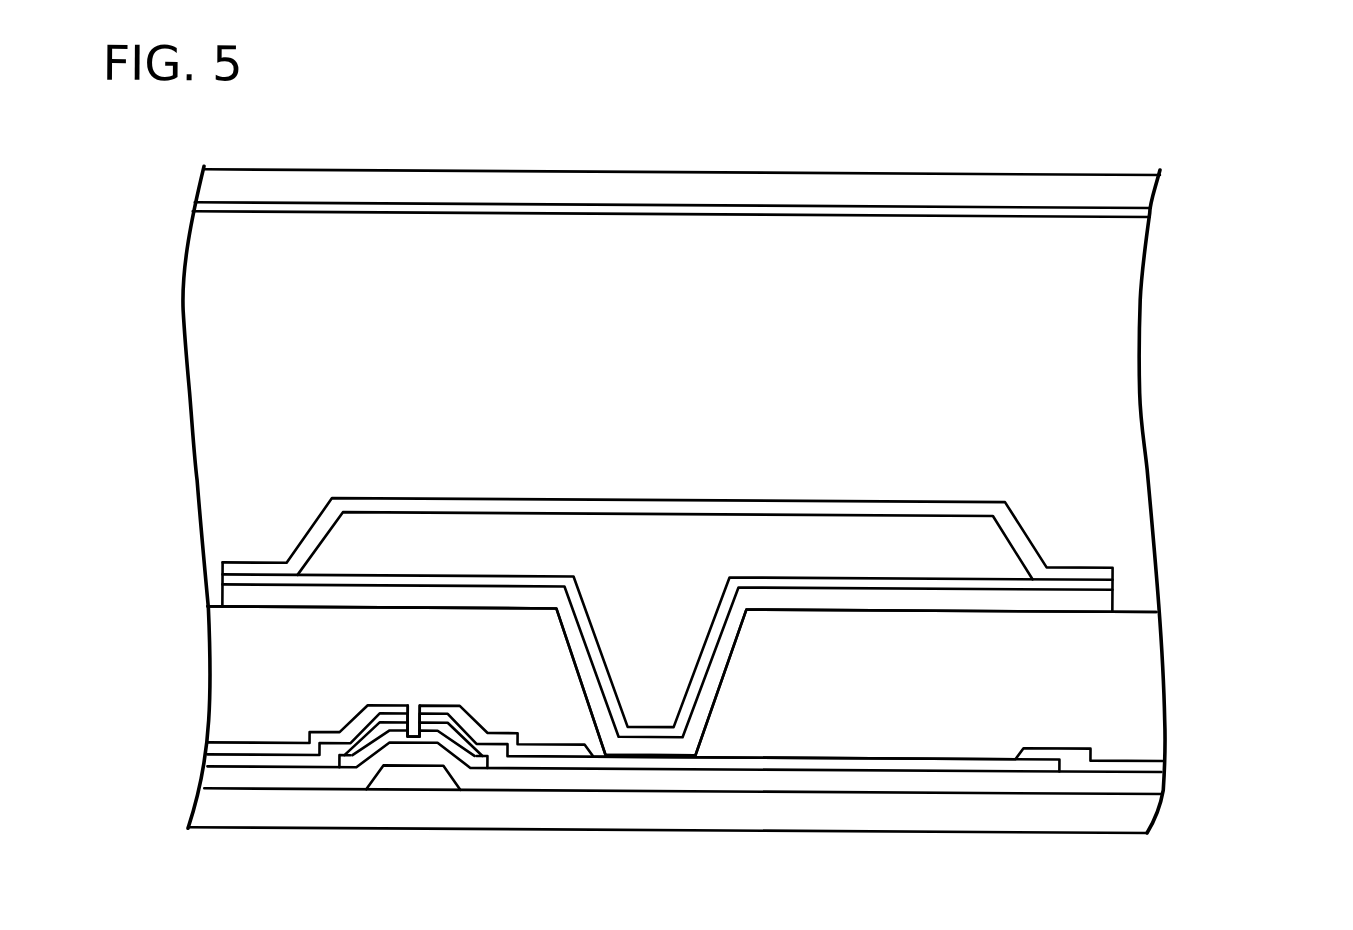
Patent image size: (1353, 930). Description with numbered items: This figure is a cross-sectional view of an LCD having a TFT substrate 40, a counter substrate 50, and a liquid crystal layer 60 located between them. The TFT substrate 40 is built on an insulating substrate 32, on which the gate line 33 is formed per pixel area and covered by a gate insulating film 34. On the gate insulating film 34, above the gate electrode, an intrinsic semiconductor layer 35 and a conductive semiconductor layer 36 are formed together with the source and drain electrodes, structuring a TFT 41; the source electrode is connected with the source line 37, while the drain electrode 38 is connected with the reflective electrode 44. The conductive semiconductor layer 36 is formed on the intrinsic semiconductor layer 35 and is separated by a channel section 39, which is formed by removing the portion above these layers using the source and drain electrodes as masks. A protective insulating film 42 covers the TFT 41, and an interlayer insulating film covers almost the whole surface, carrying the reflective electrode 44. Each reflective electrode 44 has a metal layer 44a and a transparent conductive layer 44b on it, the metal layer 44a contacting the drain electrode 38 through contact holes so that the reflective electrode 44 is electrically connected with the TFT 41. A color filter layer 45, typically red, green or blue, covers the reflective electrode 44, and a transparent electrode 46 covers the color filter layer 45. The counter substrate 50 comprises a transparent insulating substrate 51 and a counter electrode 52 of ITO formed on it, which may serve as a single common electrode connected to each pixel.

The insulating substrate 32 is at (225, 811).
The gate line 33 is at (413, 781).
The gate insulating film 34 is at (218, 781).
The intrinsic semiconductor layer 35 is at (476, 781).
The conductive semiconductor layer 36 is at (354, 784).
The source line 37 is at (400, 718).
The drain electrode 38 is at (431, 722).
The channel section 39 is at (411, 713).
The TFT substrate 40 is at (739, 701).
The TFT 41 is at (1123, 677).
The protective insulating film 42 is at (471, 723).
The reflective electrode 44 is at (746, 648).
The metal layer 44a is at (1100, 602).
The transparent conductive layer 44b is at (1100, 582).
The color filter layer 45 is at (993, 548).
The transparent electrode 46 is at (1005, 508).
The counter substrate 50 is at (743, 205).
The transparent insulating substrate 51 is at (1137, 185).
The counter electrode 52 is at (1137, 210).
The liquid crystal layer 60 is at (1122, 382).